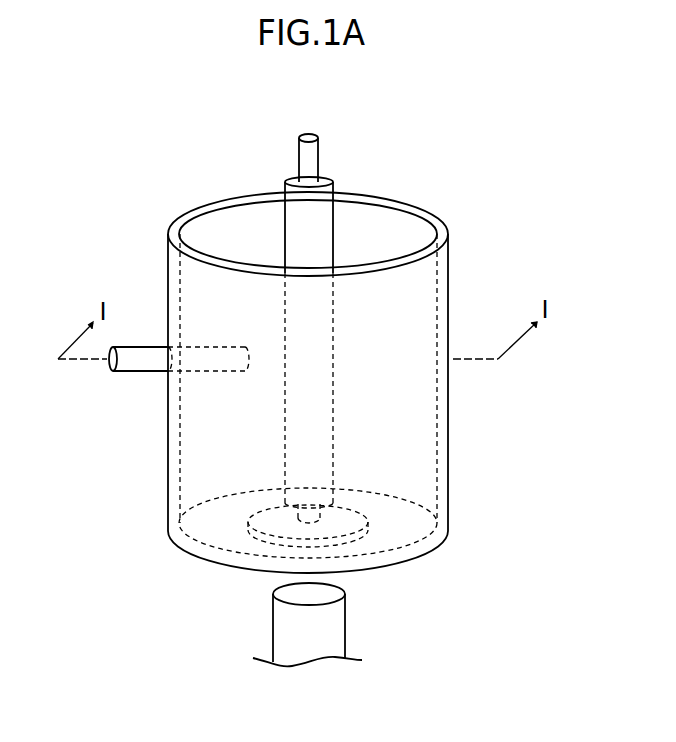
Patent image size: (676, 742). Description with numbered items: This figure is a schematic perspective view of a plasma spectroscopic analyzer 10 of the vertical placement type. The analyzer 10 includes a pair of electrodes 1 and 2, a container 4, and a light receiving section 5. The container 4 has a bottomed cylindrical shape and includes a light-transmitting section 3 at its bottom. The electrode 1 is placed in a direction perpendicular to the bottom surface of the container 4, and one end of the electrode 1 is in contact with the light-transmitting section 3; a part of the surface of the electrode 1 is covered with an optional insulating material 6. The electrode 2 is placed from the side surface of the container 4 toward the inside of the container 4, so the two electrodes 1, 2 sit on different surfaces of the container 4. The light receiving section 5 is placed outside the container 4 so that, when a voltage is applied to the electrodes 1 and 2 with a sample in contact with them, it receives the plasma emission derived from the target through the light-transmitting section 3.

The analyzer 10 is at (400, 132).
The electrode 1 is at (312, 162).
The insulating material 6 is at (318, 235).
The electrode 2 is at (133, 363).
The container 4 is at (442, 432).
The light-transmitting section 3 is at (360, 520).
The light receiving section 5 is at (333, 628).